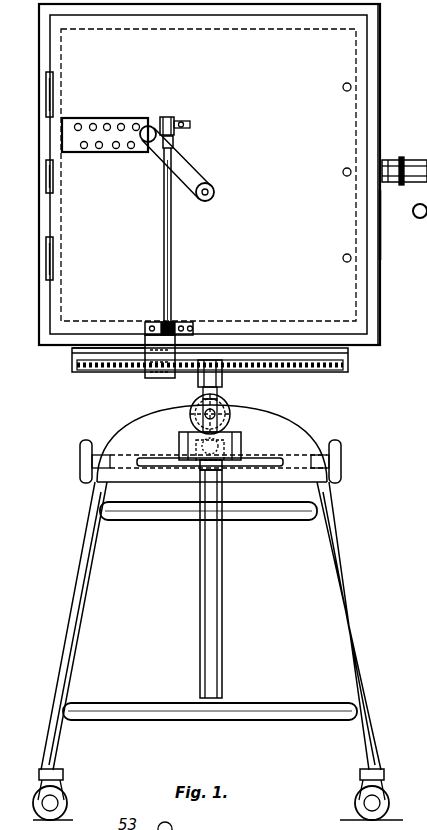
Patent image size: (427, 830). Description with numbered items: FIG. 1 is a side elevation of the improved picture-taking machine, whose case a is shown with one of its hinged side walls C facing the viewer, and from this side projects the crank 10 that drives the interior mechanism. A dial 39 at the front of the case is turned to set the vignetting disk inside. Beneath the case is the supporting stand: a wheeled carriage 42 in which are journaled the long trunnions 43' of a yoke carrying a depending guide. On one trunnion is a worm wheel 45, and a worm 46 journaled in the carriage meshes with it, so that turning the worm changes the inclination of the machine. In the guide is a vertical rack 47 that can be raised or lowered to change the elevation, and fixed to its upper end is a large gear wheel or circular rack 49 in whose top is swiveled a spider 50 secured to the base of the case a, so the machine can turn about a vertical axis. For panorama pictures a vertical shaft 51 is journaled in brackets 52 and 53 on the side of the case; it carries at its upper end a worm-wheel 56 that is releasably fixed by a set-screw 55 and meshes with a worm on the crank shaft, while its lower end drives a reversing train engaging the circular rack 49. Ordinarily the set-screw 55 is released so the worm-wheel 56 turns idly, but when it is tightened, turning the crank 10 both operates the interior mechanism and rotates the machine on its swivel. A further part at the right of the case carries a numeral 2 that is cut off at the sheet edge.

The handle knob 2 is at (410, 157).
The crank 10 is at (190, 173).
The dial 39 is at (384, 238).
The carriage 42 is at (342, 573).
The long trunnions 43' is at (226, 408).
The worm wheel 45 is at (232, 437).
The worm 46 is at (206, 466).
The rack 47 is at (223, 580).
The circular rack 49 is at (293, 373).
The spider 50 is at (197, 354).
The vertical shaft 51 is at (172, 281).
The bracket 52 is at (188, 124).
The bracket 53 is at (152, 378).
The set-screw 55 is at (172, 143).
The worm-wheel 56 is at (161, 130).
The case a is at (130, 340).
The hinged side wall C is at (209, 174).